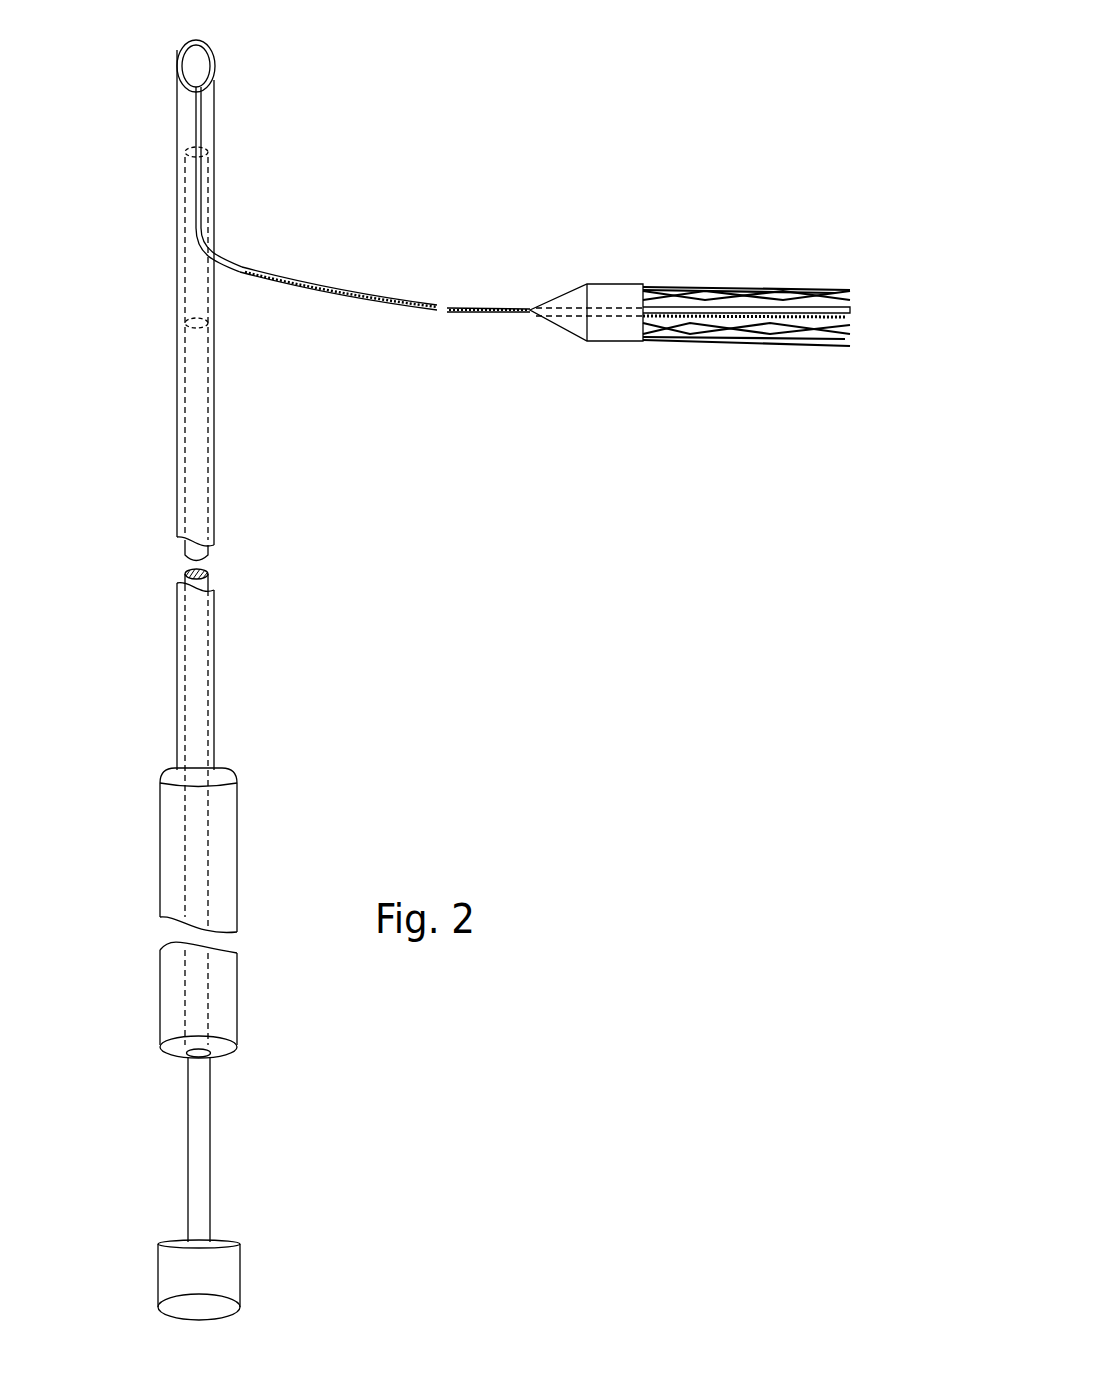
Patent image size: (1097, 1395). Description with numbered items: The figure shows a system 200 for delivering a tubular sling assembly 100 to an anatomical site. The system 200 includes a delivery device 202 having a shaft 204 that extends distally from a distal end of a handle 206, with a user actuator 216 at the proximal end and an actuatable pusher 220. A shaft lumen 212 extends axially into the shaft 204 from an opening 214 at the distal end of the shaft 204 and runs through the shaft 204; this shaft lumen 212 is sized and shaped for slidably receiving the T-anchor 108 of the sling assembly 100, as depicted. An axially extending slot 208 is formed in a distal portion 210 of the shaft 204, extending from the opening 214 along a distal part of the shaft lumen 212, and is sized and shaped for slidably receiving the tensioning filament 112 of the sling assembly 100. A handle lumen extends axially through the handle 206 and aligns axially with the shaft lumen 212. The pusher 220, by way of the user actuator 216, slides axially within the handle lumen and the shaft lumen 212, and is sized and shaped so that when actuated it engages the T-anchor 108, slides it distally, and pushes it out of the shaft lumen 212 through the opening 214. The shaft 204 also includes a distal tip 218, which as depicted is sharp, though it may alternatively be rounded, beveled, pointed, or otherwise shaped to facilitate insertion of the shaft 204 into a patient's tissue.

The tubular sling assembly 100 is at (658, 268).
The T-anchor 108 is at (212, 170).
The tensioning filament 112 is at (315, 292).
The system 200 is at (456, 144).
The delivery device 202 is at (133, 734).
The shaft 204 is at (177, 397).
The handle 206 is at (160, 873).
The slot 208 is at (195, 106).
The distal portion 210 is at (161, 172).
The shaft lumen 212 is at (178, 277).
The opening 214 is at (204, 69).
The user actuator 216 is at (180, 816).
The distal tip 218 is at (195, 41).
The pusher 220 is at (198, 1112).